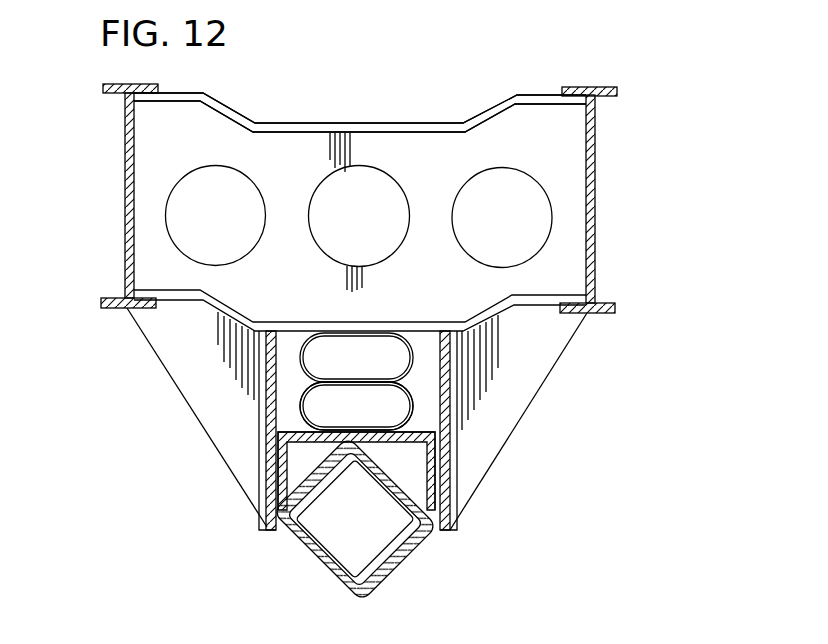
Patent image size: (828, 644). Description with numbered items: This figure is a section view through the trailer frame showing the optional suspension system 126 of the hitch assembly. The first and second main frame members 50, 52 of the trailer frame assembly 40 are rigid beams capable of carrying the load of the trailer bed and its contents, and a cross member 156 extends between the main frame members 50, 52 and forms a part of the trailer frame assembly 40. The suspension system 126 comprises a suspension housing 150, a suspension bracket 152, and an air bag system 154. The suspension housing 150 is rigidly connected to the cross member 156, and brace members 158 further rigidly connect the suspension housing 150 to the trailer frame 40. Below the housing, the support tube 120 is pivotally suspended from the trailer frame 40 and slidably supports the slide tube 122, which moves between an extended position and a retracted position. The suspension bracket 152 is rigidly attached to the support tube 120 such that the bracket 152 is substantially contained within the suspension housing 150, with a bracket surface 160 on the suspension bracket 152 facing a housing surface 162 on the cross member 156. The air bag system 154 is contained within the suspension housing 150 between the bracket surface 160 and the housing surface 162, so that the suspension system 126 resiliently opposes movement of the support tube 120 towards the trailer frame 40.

The trailer frame assembly 40 is at (634, 135).
The first main frame member 50 is at (125, 188).
The second main frame member 52 is at (590, 195).
The support tube 120 is at (410, 545).
The slide tube 122 is at (390, 560).
The suspension system 126 is at (570, 422).
The suspension housing 150 is at (272, 438).
The suspension bracket 152 is at (280, 458).
The air bag system 154 is at (422, 390).
The cross member 156 is at (420, 155).
The brace members 158 is at (195, 373).
The bracket surface 160 is at (288, 406).
The housing surface 162 is at (302, 341).